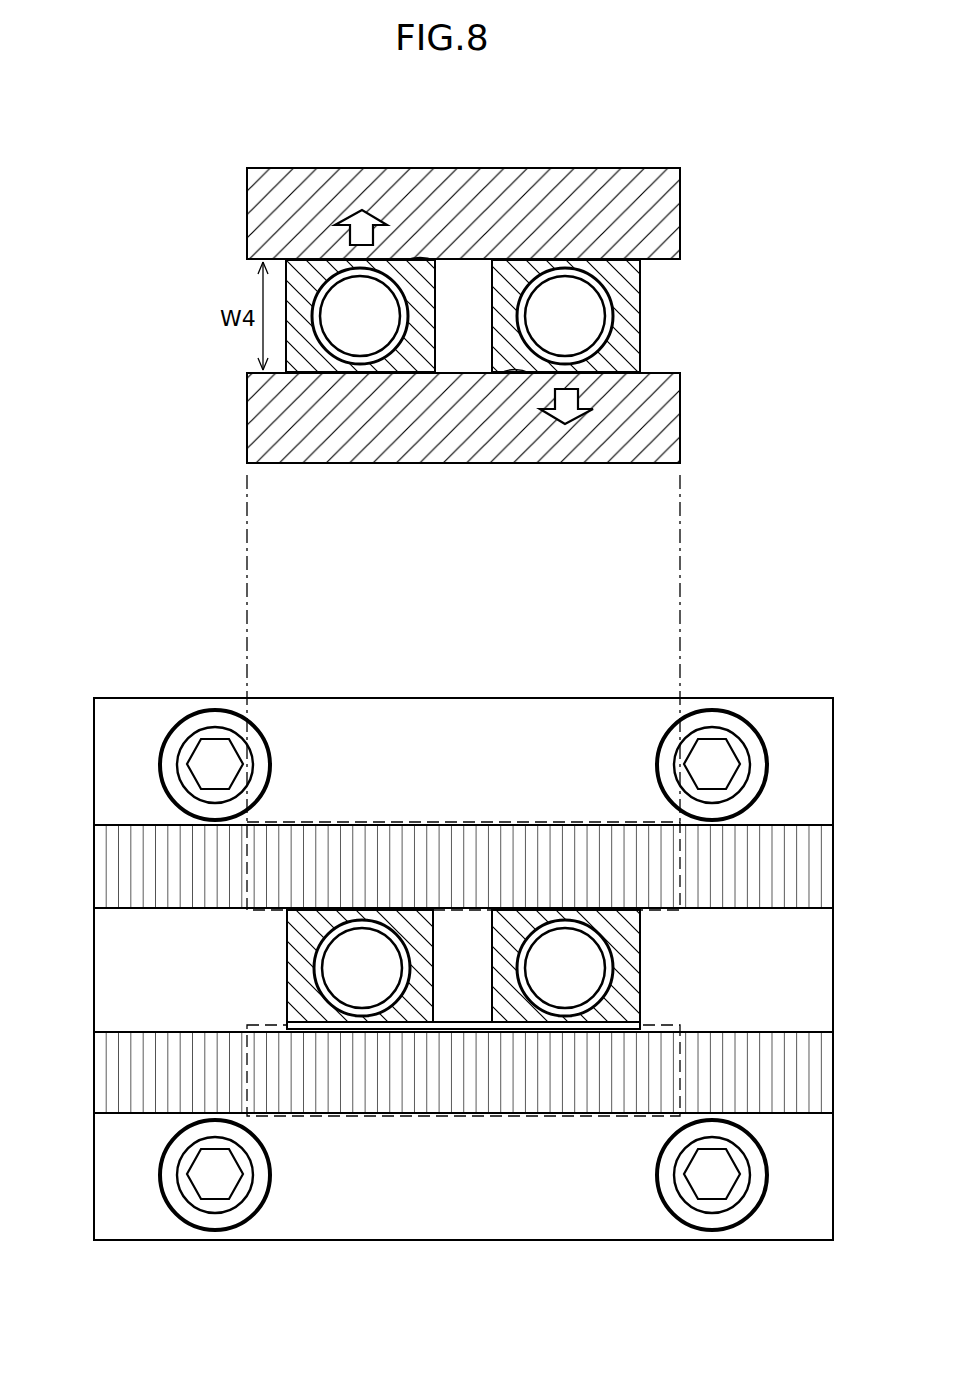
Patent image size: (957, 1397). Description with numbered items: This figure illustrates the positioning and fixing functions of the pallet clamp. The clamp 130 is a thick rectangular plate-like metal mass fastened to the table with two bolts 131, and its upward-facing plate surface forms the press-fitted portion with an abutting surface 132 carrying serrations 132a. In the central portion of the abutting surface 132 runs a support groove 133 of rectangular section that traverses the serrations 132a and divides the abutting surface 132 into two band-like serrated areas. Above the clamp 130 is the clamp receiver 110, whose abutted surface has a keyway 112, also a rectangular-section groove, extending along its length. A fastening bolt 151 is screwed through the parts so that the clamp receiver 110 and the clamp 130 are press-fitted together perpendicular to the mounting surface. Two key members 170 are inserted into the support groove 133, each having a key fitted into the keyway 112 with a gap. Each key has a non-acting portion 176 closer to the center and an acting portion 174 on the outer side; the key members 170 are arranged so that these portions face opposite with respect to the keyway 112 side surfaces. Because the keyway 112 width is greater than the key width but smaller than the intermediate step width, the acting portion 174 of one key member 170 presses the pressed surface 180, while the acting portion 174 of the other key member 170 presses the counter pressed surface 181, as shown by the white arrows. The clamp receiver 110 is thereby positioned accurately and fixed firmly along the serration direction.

The clamp receiver 110 is at (636, 168).
The keyway 112 is at (655, 373).
The clamp 130 is at (794, 698).
The bolts 131 is at (217, 729).
The abutting surface 132 is at (815, 862).
The serrations 132a is at (433, 852).
The support groove 133 is at (105, 966).
The fastening bolt 151 is at (387, 331).
The key members 170 is at (293, 966).
The acting portion 174 is at (332, 262).
The non-acting portion 176 is at (605, 258).
The pressed surface 180 is at (520, 360).
The counter pressed surface 181 is at (421, 270).